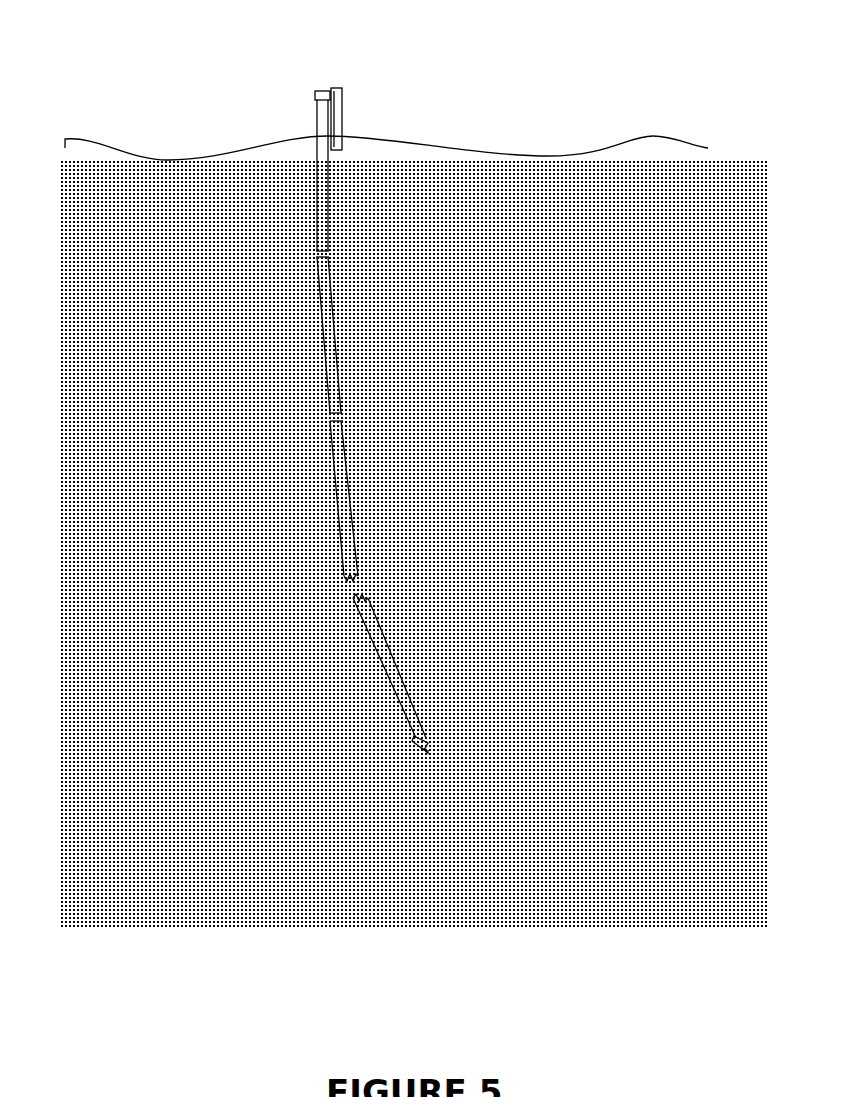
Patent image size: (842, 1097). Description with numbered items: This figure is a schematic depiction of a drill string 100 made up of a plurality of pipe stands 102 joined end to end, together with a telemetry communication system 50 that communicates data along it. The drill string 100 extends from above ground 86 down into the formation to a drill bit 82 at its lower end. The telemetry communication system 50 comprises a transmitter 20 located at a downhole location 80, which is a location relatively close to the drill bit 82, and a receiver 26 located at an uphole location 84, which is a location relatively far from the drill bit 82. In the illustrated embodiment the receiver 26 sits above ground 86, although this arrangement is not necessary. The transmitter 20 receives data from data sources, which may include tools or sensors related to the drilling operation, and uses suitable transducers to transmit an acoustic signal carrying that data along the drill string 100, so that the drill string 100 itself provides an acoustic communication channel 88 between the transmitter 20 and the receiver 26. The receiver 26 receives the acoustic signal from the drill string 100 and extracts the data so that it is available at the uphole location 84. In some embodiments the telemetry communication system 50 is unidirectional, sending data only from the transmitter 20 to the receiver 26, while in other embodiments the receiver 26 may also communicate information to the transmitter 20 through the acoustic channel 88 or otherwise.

The transmitter 20 is at (406, 740).
The receiver 26 is at (308, 89).
The telemetry communication system 50 is at (413, 110).
The downhole location 80 is at (424, 725).
The drill bit 82 is at (420, 744).
The uphole location 84 is at (297, 100).
The ground 86 is at (548, 558).
The acoustic communication channel 88 is at (338, 512).
The drill string 100 is at (314, 183).
The pipe stands 102 is at (315, 292).